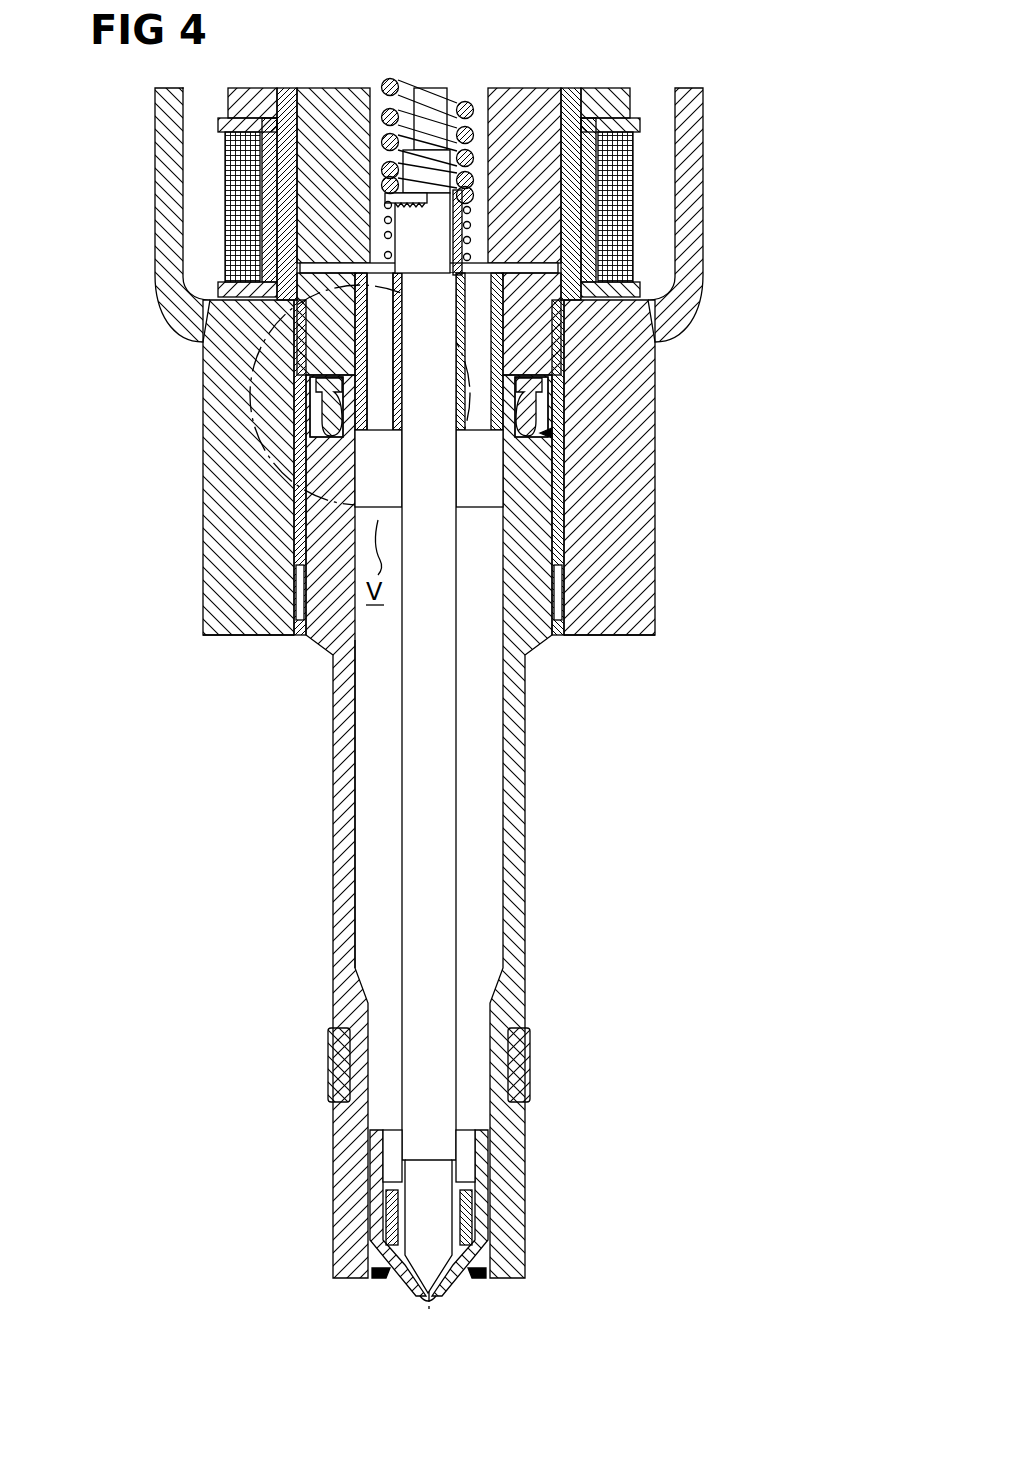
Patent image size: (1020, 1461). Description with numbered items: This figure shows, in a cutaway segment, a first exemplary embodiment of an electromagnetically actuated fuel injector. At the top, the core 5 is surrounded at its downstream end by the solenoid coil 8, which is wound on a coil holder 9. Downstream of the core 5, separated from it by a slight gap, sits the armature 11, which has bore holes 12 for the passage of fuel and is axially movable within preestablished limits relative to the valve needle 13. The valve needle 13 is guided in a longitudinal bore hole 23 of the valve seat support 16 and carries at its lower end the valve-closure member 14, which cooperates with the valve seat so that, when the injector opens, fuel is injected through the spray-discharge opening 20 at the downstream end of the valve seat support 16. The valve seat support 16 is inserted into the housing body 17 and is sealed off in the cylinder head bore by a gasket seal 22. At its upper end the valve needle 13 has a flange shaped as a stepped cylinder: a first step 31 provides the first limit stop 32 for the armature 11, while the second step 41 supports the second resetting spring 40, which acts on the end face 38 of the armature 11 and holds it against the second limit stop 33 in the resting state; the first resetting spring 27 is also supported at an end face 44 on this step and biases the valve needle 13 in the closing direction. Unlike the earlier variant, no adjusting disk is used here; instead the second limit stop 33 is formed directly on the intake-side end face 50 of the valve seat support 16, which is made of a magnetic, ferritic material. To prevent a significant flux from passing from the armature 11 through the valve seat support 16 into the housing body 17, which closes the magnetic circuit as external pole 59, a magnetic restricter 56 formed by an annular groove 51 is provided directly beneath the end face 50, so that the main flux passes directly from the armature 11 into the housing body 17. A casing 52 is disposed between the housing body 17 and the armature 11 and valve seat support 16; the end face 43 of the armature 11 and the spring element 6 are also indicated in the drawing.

The core 5 is at (519, 88).
The restoring spring 6 is at (482, 76).
The solenoid coil 8 is at (626, 185).
The coil holder 9 is at (618, 88).
The armature 11 is at (664, 304).
The bore holes 12 is at (375, 393).
The valve needle 13 is at (443, 665).
The valve-closure member 14 is at (438, 1305).
The valve seat support 16 is at (528, 880).
The housing body 17 is at (645, 505).
The spray-discharge opening 20 is at (429, 1300).
The gasket seal 22 is at (533, 1078).
The longitudinal bore hole 23 is at (498, 828).
The first resetting spring 27 is at (437, 88).
The first step 31 is at (440, 256).
The first limit stop 32 is at (414, 270).
The second limit stop 33 is at (297, 360).
The end face 38 is at (507, 270).
The second resetting spring 40 is at (313, 86).
The second step 41 is at (352, 87).
The end face of armature 43 is at (553, 410).
The end face 44 is at (405, 82).
The intake-side end face 50 is at (520, 372).
The annular groove 51 is at (338, 410).
The casing 52 is at (568, 555).
The magnetic restricter 56 is at (556, 433).
The external pole 59 is at (647, 603).